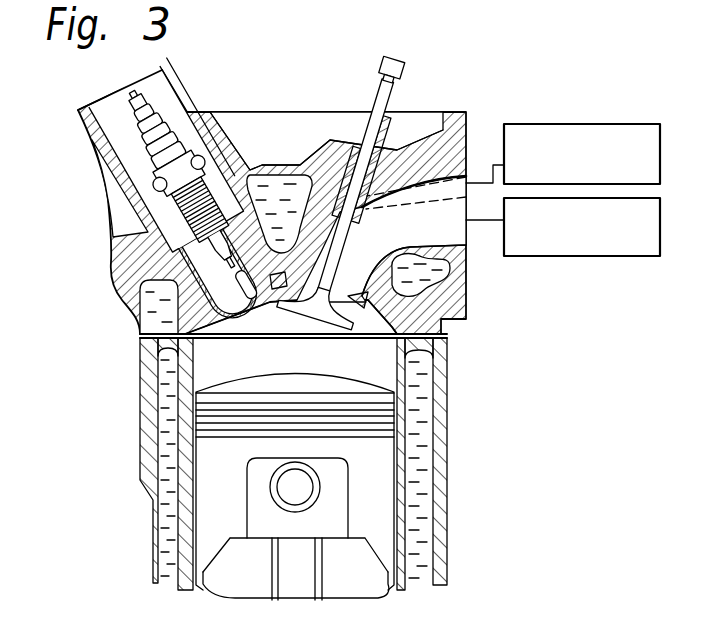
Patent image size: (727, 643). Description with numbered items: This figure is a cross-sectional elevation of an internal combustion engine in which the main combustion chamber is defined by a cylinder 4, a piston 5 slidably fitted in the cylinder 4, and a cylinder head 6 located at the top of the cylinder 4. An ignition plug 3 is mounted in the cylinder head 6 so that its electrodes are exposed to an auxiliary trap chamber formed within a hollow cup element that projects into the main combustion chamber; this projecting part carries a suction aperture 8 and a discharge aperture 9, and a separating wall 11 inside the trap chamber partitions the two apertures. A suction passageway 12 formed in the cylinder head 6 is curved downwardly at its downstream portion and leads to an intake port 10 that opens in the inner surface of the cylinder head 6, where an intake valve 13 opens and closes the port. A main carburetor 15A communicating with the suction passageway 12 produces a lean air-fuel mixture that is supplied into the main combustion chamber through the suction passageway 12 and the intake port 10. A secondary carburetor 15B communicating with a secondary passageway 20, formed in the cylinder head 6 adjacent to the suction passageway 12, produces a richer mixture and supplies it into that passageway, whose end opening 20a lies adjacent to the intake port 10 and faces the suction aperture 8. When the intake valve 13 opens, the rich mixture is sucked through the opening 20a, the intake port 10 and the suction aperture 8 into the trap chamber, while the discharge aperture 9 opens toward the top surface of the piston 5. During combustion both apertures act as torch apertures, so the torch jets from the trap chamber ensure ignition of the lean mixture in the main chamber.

The ignition plug 3 is at (225, 152).
The cylinder 4 is at (440, 396).
The piston 5 is at (357, 553).
The cylinder head 6 is at (468, 290).
The suction aperture 8 is at (258, 318).
The discharge aperture 9 is at (236, 312).
The intake port 10 is at (350, 296).
The separating wall 11 is at (245, 285).
The suction passageway 12 is at (438, 239).
The intake valve 13 is at (335, 338).
The main carburetor 15A is at (520, 257).
The secondary carburetor 15B is at (512, 125).
The secondary passageway 20 is at (303, 248).
The opening 20a is at (285, 290).